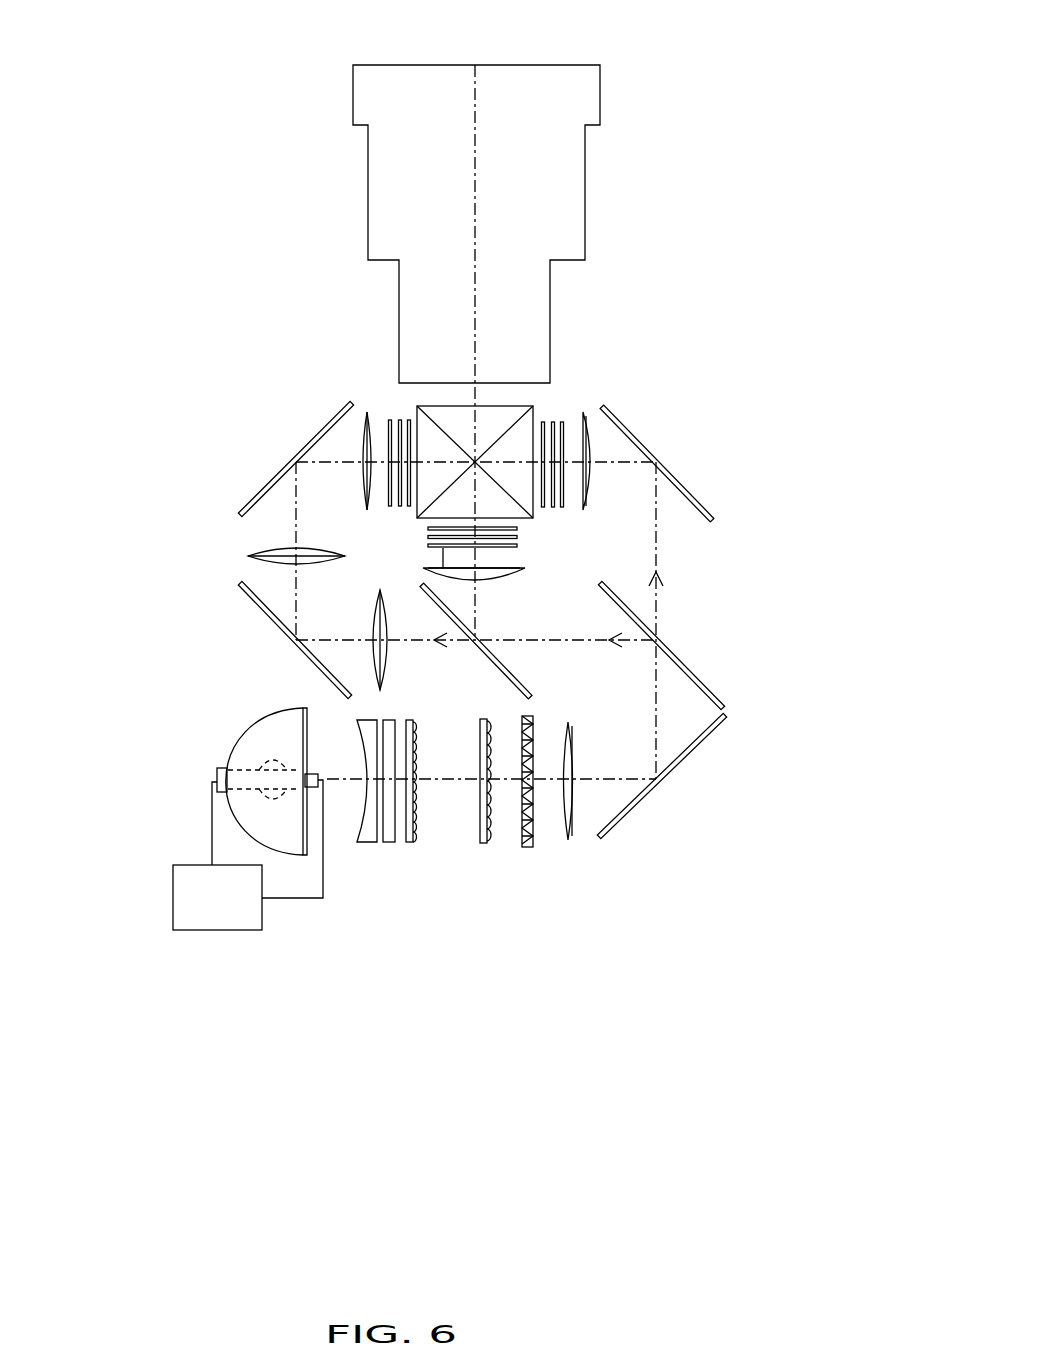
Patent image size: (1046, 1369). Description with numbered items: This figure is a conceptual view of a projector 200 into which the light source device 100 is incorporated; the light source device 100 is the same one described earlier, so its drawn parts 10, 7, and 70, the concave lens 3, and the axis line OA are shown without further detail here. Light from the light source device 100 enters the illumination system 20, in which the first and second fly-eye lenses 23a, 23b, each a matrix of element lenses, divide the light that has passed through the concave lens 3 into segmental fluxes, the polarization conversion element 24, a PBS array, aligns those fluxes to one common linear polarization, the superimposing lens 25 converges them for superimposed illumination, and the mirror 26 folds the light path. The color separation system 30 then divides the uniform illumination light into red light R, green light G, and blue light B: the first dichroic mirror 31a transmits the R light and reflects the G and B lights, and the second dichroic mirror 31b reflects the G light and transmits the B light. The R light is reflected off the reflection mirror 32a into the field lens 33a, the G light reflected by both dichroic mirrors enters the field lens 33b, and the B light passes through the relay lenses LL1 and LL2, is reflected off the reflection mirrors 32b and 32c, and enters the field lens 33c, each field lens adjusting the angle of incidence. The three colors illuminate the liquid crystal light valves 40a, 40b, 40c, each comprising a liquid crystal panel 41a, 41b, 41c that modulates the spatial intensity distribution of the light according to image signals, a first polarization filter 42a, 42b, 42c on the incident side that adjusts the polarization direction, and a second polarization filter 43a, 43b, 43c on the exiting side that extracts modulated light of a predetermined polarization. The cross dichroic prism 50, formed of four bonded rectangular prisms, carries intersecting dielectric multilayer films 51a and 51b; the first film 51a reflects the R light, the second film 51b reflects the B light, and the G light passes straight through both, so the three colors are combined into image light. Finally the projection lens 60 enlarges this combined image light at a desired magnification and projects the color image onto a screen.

The projector 200 is at (825, 21).
The projection lens 60 is at (533, 222).
The cross dichroic prism 50 is at (465, 401).
The first dielectric multilayer film 51a is at (413, 407).
The second dielectric multilayer film 51b is at (531, 406).
The liquid crystal light valve 40a is at (639, 446).
The liquid crystal light valve 40b is at (499, 581).
The liquid crystal light valve 40c is at (313, 494).
The liquid crystal panel 41a is at (563, 490).
The liquid crystal panel 41b is at (527, 578).
The liquid crystal panel 41c is at (385, 447).
The first polarization filter 42a is at (545, 507).
The first polarization filter 42b is at (456, 586).
The first polarization filter 42c is at (388, 512).
The second polarization filter 43a is at (563, 507).
The second polarization filter 43b is at (451, 548).
The second polarization filter 43c is at (398, 510).
The field lens 33a is at (594, 442).
The field lens 33b is at (527, 580).
The field lens 33c is at (362, 482).
The color separation system 30 is at (474, 569).
The first dichroic mirror 31a is at (690, 672).
The second dichroic mirror 31b is at (510, 672).
The reflection mirror 32a is at (700, 500).
The reflection mirror 32b is at (267, 617).
The reflection mirror 32c is at (258, 492).
The relay lens LL1 is at (387, 672).
The relay lens LL2 is at (248, 556).
The illumination system 20 is at (552, 872).
The first fly-eye lens 23a is at (408, 845).
The second fly-eye lens 23b is at (480, 845).
The polarization conversion element 24 is at (527, 848).
The superimposing lens 25 is at (570, 845).
The mirror 26 is at (635, 803).
The light source device 100 is at (240, 871).
The light source lamp 10 is at (188, 782).
The lamp driving device 70 is at (173, 892).
The concave lens 3 is at (362, 845).
The parallelizing plate 7 is at (388, 845).
The optical axis OA is at (436, 783).
The red light R is at (656, 540).
The green light G is at (477, 625).
The blue light B is at (296, 531).